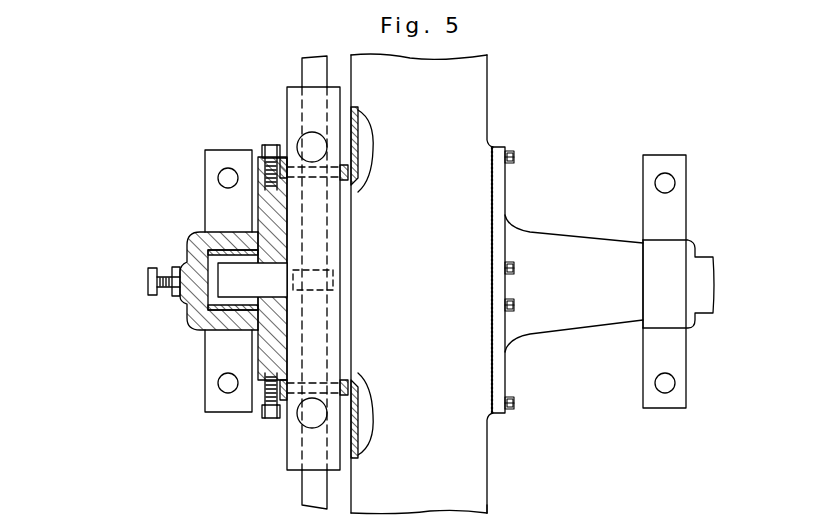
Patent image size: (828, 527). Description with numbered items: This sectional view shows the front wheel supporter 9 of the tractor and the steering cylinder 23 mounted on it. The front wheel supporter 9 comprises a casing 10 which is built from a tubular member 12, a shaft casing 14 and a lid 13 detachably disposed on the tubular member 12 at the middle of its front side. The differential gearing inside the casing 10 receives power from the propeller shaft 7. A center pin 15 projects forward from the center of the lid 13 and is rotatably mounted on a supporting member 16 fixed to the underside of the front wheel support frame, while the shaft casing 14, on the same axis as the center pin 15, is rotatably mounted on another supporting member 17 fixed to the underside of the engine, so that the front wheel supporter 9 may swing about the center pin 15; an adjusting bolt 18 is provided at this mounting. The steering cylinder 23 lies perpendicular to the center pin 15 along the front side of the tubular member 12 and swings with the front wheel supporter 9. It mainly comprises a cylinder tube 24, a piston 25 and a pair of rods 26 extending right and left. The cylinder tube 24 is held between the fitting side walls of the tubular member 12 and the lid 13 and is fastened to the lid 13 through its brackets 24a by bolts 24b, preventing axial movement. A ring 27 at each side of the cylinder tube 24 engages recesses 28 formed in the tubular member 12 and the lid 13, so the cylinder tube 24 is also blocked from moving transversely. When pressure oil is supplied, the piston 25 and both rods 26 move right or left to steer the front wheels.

The propeller shaft 7 is at (708, 282).
The front wheel supporter 9 is at (500, 118).
The casing 10 is at (500, 491).
The tubular member 12 is at (478, 200).
The lid 13 is at (260, 346).
The shaft casing 14 is at (580, 318).
The center pin 15 is at (210, 296).
The supporting member 16 is at (222, 403).
The supporting member 17 is at (652, 358).
The adjusting bolt 18 is at (148, 268).
The steering cylinder 23 is at (288, 108).
The cylinder tube 24 is at (340, 235).
The brackets 24a is at (287, 158).
The bolts 24b is at (262, 150).
The piston 25 is at (333, 283).
The rods 26 is at (320, 60).
The ring 27 is at (355, 175).
The recesses 28 is at (340, 172).